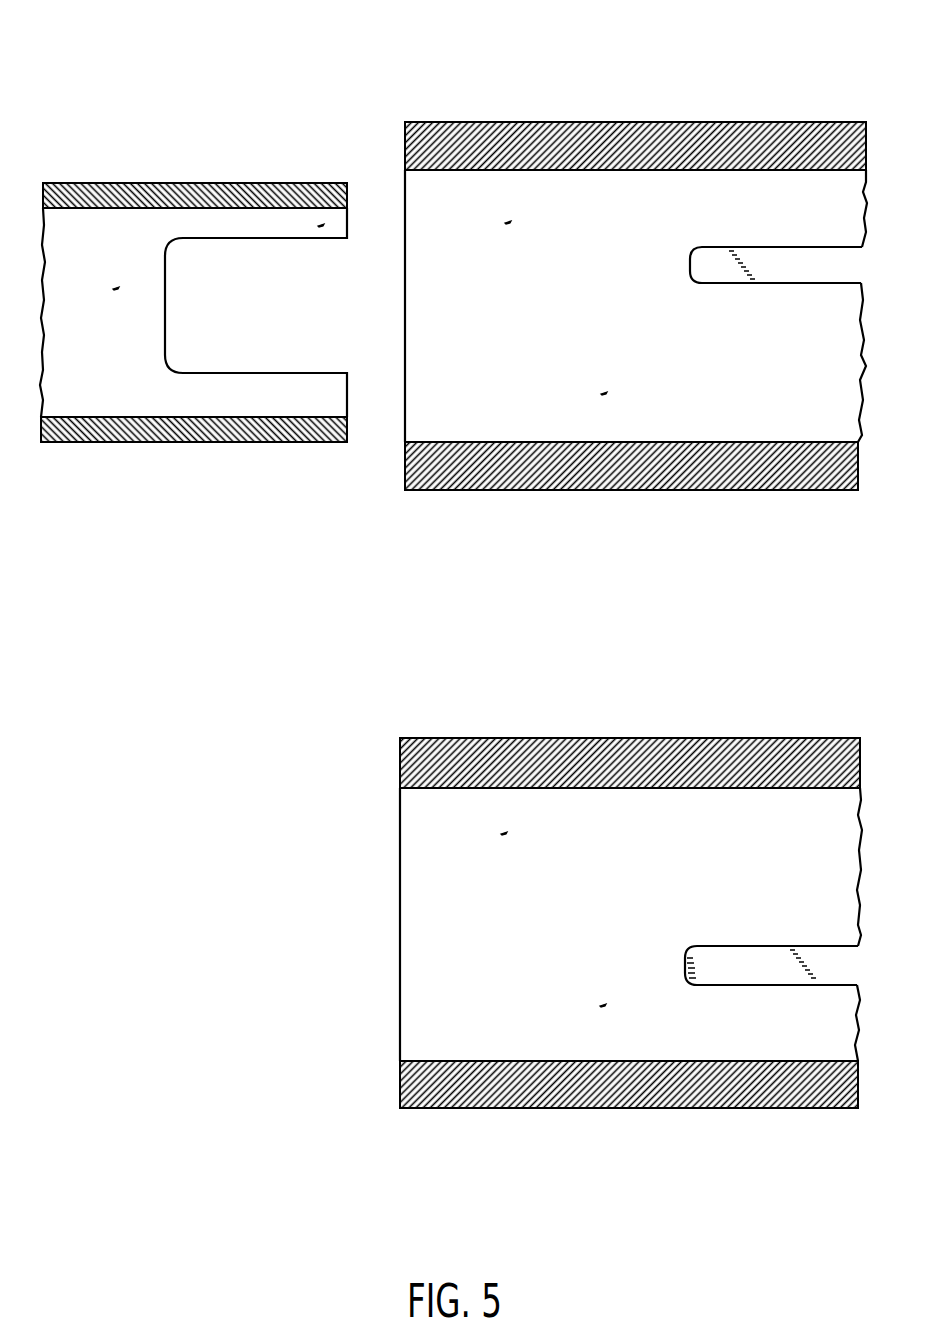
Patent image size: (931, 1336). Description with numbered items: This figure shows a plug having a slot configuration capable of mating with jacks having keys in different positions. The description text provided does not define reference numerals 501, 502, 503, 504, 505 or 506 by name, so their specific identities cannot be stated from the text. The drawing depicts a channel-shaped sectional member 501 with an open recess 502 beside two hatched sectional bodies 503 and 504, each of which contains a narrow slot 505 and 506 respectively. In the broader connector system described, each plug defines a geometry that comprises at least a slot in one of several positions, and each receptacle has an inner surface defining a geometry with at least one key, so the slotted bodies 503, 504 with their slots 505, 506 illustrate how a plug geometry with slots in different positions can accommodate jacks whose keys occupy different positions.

The first connector element (channel-shaped member with C-shaped recess) 501 is at (107, 150).
The recess / cavity of first connector element 502 is at (270, 310).
The second connector element (housing with slot) 503 is at (713, 95).
The third connector element (housing with slot) 504 is at (733, 715).
The slot in second connector element 505 is at (787, 246).
The slot in third connector element 506 is at (757, 946).